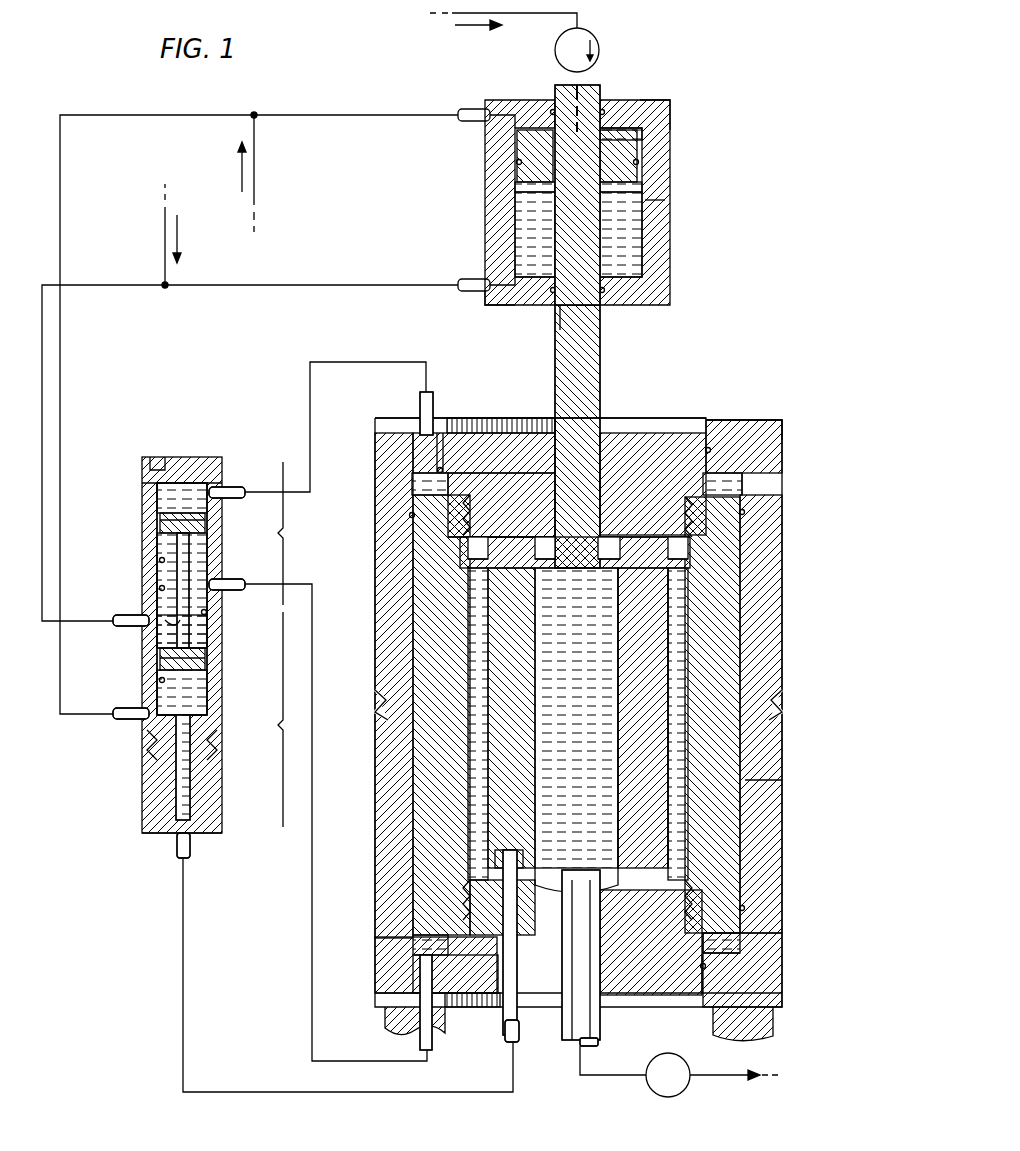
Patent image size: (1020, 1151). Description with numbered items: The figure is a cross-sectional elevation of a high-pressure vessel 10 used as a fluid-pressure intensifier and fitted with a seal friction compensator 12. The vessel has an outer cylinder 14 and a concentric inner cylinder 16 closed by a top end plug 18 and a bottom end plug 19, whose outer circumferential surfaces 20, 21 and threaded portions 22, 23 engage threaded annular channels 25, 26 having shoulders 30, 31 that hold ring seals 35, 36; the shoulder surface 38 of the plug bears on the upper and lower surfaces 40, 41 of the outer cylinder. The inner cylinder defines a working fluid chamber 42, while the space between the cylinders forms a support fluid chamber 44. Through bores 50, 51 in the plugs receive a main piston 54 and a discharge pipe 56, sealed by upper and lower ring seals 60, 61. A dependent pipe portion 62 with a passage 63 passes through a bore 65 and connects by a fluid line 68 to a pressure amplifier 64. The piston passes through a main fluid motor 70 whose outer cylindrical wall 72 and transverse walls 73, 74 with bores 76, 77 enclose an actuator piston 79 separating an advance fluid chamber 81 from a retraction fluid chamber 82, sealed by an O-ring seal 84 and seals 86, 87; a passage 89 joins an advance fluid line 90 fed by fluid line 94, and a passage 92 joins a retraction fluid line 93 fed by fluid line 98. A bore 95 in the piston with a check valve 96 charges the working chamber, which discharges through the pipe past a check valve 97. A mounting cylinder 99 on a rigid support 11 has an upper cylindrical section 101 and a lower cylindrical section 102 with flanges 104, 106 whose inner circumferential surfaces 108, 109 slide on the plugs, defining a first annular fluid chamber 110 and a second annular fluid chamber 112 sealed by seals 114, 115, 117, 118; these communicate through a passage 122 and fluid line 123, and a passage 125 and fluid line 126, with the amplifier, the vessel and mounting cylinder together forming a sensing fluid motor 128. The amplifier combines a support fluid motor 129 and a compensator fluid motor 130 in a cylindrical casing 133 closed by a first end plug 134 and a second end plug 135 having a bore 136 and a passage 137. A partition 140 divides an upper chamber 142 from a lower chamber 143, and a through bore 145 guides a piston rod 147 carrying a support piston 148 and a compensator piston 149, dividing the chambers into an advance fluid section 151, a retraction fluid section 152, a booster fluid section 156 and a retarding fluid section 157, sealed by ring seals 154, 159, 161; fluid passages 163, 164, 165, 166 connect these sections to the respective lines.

The high-pressure vessel 10 is at (625, 418).
The rigid support 11 is at (385, 1022).
The seal friction compensator 12 is at (795, 575).
The outer cylinder 14 is at (745, 660).
The inner cylinder 16 is at (625, 716).
The top end plug 18 is at (516, 432).
The bottom end plug 19 is at (434, 1045).
The outer circumferential surface 20 is at (710, 448).
The outer circumferential surface 21 is at (700, 1000).
The threaded portion 22 is at (688, 510).
The threaded portion 23 is at (696, 890).
The annular channel 25 is at (462, 545).
The annular channel 26 is at (468, 894).
The shoulder 30 is at (465, 568).
The shoulder 31 is at (472, 866).
The upper ring seal 35 is at (490, 548).
The lower ring seal 36 is at (525, 850).
The shoulder surface 38 is at (440, 500).
The upper surface 40 is at (412, 482).
The lower surface 41 is at (413, 945).
The working fluid chamber 42 is at (576, 718).
The support fluid chamber 44 is at (668, 752).
The through bore 50 is at (556, 428).
The through bore 51 is at (562, 1040).
The main piston 54 is at (600, 360).
The discharge pipe 56 is at (600, 1046).
The upper ring seal 60 is at (541, 537).
The lower ring seal 61 is at (651, 942).
The dependent pipe portion 62 is at (518, 1046).
The passage 63 is at (532, 856).
The pressure amplifier 64 is at (125, 840).
The bore 65 is at (503, 1035).
The fluid line 68 is at (258, 1094).
The main fluid motor 70 is at (672, 190).
The outer cylindrical wall 72 is at (660, 228).
The upper transverse wall 73 is at (662, 98).
The lower transverse wall 74 is at (486, 305).
The bore 76 is at (604, 96).
The bore 77 is at (600, 318).
The actuator piston 79 is at (516, 188).
The advance fluid chamber 81 is at (660, 138).
The retraction fluid chamber 82 is at (522, 222).
The O-ring seal 84 is at (517, 164).
The seal 86 is at (548, 108).
The seal 87 is at (604, 292).
The passage 89 is at (508, 126).
The advance fluid line 90 is at (462, 114).
The passage 92 is at (510, 300).
The retraction fluid line 93 is at (462, 284).
The fluid line 94 is at (257, 170).
The bore 95 is at (560, 346).
The check valve 96 is at (600, 36).
The check valve 97 is at (654, 1090).
The fluid line 98 is at (165, 232).
The mounting cylinder 99 is at (796, 712).
The upper cylindrical section 101 is at (783, 620).
The lower cylindrical section 102 is at (783, 774).
The upper flange 104 is at (736, 424).
The lower flange 106 is at (772, 995).
The inner circumferential surface 108 is at (692, 420).
The inner circumferential surface 109 is at (742, 968).
The first annular fluid chamber 110 is at (744, 484).
The second annular fluid chamber 112 is at (742, 946).
The seal 114 is at (446, 460).
The seal 115 is at (745, 513).
The seal 117 is at (700, 968).
The seal 118 is at (745, 908).
The passage 122 is at (413, 450).
The fluid line 123 is at (420, 404).
The passage 125 is at (420, 975).
The fluid line 126 is at (311, 1050).
The sensing fluid motor 128 is at (790, 410).
The support fluid motor 129 is at (286, 830).
The compensator fluid motor 130 is at (285, 552).
The cylindrical casing 133 is at (145, 770).
The first end plug 134 is at (180, 457).
The second end plug 135 is at (145, 802).
The bore 136 is at (192, 798).
The passage 137 is at (192, 838).
The partition 140 is at (160, 588).
The upper chamber 142 is at (160, 560).
The lower chamber 143 is at (160, 683).
The through bore 145 is at (166, 622).
The piston rod 147 is at (177, 545).
The support piston 148 is at (207, 665).
The compensator piston 149 is at (160, 520).
The advance fluid section 151 is at (206, 640).
The retraction fluid section 152 is at (206, 690).
The ring seal 154 is at (165, 656).
The booster fluid section 156 is at (160, 487).
The retarding fluid section 157 is at (206, 547).
The ring seal 159 is at (207, 525).
The ring seal 161 is at (206, 612).
The fluid passage 163 is at (228, 488).
The fluid passage 164 is at (228, 582).
The fluid passage 165 is at (113, 620).
The fluid passage 166 is at (148, 720).